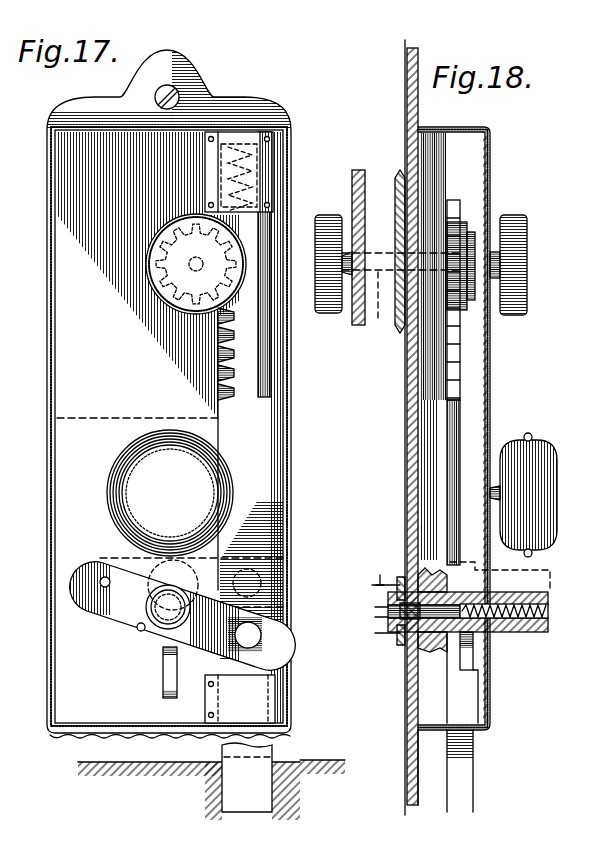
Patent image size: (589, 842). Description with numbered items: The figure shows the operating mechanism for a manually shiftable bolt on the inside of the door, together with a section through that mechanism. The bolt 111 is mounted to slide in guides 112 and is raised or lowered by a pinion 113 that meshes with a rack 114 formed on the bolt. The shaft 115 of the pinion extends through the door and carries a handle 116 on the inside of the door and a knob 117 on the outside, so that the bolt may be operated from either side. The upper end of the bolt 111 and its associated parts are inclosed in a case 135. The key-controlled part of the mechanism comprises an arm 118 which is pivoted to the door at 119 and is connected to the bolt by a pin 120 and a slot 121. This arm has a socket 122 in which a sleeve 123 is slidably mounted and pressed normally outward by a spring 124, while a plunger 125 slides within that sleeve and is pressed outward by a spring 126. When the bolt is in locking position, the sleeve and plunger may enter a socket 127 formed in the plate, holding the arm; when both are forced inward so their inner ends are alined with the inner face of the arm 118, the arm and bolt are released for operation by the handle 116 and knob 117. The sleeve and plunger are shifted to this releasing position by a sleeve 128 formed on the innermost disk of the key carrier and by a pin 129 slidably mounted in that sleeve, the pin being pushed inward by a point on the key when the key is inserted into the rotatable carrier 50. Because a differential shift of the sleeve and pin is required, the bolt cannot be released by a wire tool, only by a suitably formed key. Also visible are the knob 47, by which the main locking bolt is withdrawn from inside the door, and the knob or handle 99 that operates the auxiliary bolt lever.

In FIG. 17, the knob 47 is at (170, 493).
In FIG. 18, the knob 47 is at (530, 440).
In FIG. 18, the rotatable cylindrical shell 50 is at (380, 565).
In FIG. 17, the knob or handle 99 is at (162, 680).
In FIG. 17, the bolt 111 is at (262, 498).
In FIG. 18, the bolt 111 is at (462, 418).
In FIG. 17, the guides 112 is at (250, 160).
In FIG. 18, the guides 112 is at (462, 180).
In FIG. 17, the pinion 113 is at (150, 290).
In FIG. 18, the pinion 113 is at (470, 224).
In FIG. 17, the rack 114 is at (226, 352).
In FIG. 18, the rack 114 is at (455, 349).
In FIG. 17, the shaft 115 is at (146, 263).
In FIG. 18, the shaft 115 is at (400, 325).
In FIG. 17, the handle 116 is at (150, 248).
In FIG. 18, the handle 116 is at (527, 274).
In FIG. 18, the knob 117 is at (325, 314).
In FIG. 17, the arm 118 is at (128, 612).
In FIG. 18, the arm 118 is at (476, 655).
In FIG. 17, the pivot 119 is at (103, 578).
In FIG. 17, the pin 120 is at (258, 637).
In FIG. 17, the slot 121 is at (255, 611).
In FIG. 18, the slot 121 is at (461, 605).
In FIG. 17, the socket 122 is at (165, 615).
In FIG. 18, the socket 122 is at (530, 632).
In FIG. 18, the sleeve 123 is at (440, 646).
In FIG. 18, the spring 124 is at (500, 577).
In FIG. 18, the plunger 125 is at (495, 572).
In FIG. 18, the spring 126 is at (540, 622).
In FIG. 18, the socket 127 is at (404, 646).
In FIG. 18, the sleeve 128 is at (398, 620).
In FIG. 18, the pin 129 is at (397, 598).
In FIG. 17, the case 135 is at (47, 460).
In FIG. 18, the case 135 is at (492, 370).